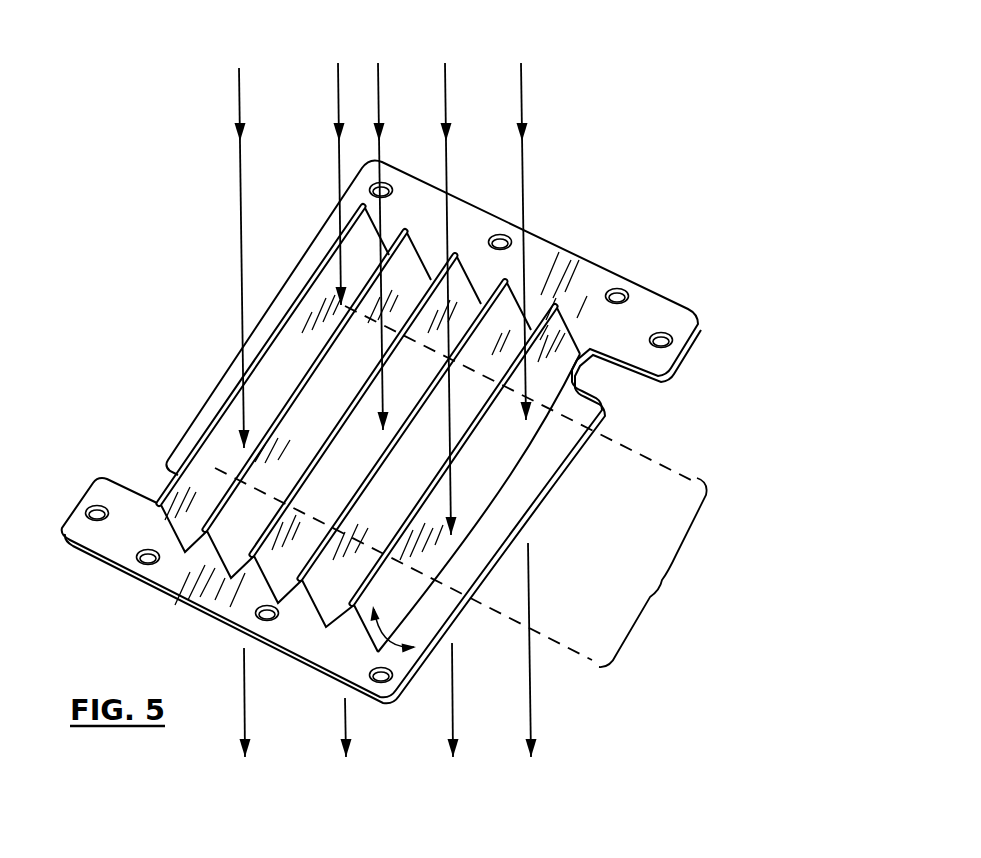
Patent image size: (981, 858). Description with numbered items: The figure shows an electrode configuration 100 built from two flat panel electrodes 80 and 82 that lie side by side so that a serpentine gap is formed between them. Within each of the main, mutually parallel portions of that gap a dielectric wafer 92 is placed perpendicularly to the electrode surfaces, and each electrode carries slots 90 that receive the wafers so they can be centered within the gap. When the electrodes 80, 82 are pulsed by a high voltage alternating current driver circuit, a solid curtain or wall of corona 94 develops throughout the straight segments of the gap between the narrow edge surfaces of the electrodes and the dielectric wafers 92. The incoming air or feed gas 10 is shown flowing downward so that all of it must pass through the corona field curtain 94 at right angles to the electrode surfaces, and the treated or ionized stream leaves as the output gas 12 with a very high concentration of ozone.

The feed gas 10 is at (487, 70).
The output gas 12 is at (350, 737).
The electrode 80 is at (660, 293).
The electrode 82 is at (180, 606).
The slots 90 is at (396, 616).
The dielectric wafer 92 is at (292, 389).
The corona field curtain 94 is at (663, 580).
The electrode configuration 100 is at (188, 246).